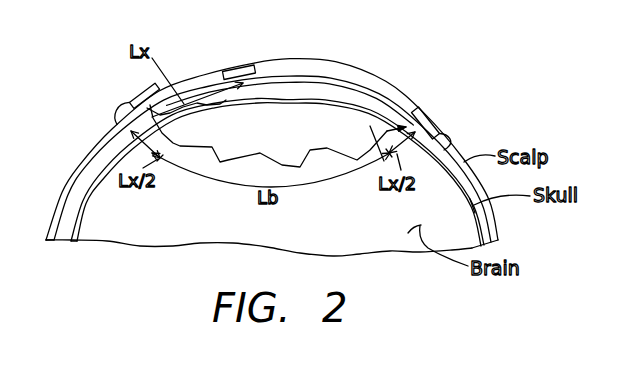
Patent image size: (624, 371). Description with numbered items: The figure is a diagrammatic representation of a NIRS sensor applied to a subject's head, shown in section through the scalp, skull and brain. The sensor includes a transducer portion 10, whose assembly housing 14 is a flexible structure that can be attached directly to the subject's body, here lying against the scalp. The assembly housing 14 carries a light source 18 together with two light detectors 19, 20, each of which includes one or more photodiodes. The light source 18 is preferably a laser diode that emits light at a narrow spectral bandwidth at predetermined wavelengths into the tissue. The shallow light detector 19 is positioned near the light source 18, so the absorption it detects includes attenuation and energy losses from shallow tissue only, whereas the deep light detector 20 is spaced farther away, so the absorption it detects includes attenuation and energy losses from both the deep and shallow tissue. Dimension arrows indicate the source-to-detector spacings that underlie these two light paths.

The transducer portion 10 is at (494, 53).
The assembly housing 14 is at (345, 58).
The light source 18 is at (129, 101).
The shallow light detector 19 is at (238, 68).
The deep light detector 20 is at (440, 120).